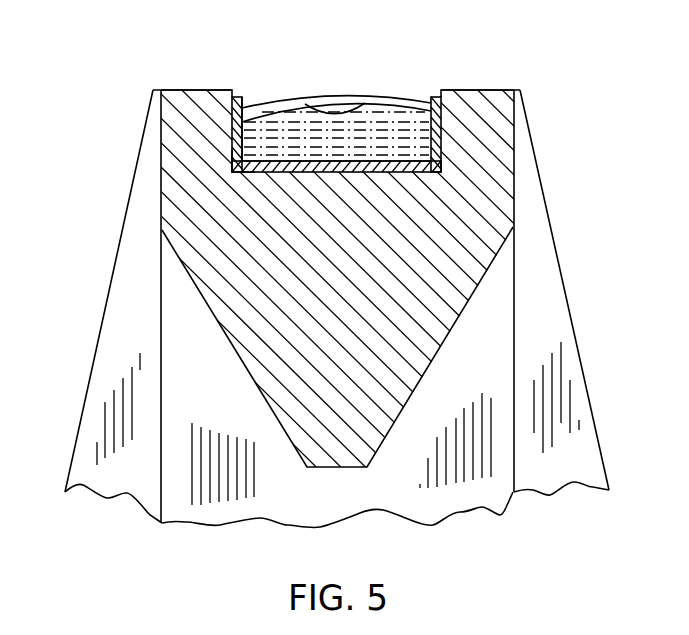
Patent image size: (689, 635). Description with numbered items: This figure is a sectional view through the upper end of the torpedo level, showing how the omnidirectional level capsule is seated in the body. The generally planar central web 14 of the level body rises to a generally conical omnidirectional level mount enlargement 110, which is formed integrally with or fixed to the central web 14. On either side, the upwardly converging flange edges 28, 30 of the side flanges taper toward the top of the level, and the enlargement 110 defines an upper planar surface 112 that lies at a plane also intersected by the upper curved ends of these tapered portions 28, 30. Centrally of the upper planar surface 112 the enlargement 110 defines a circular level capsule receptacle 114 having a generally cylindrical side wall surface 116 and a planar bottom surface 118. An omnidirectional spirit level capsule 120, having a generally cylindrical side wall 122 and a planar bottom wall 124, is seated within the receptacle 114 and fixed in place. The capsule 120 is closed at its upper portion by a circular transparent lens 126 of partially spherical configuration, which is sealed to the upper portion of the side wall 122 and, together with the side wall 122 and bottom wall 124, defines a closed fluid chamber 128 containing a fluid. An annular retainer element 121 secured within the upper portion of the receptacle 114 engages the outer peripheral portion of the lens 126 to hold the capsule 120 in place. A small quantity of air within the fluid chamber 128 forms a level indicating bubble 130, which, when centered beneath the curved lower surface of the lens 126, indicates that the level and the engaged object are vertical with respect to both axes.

The central web 14 is at (470, 490).
The upwardly converging flange edge 28 is at (133, 278).
The upwardly converging flange edge 30 is at (535, 245).
The omnidirectional level mount enlargement 110 is at (480, 301).
The upper planar surface 112 is at (188, 89).
The circular level capsule receptacle 114 is at (283, 110).
The cylindrical side wall surface 116 is at (410, 173).
The planar bottom surface 118 is at (340, 173).
The omnidirectional spirit level capsule 120 is at (238, 152).
The annular retainer element 121 is at (240, 103).
The cylindrical side wall 122 is at (240, 172).
The planar bottom wall 124 is at (265, 173).
The circular transparent lens 126 is at (403, 100).
The closed fluid chamber 128 is at (413, 120).
The level indicating bubble 130 is at (332, 110).